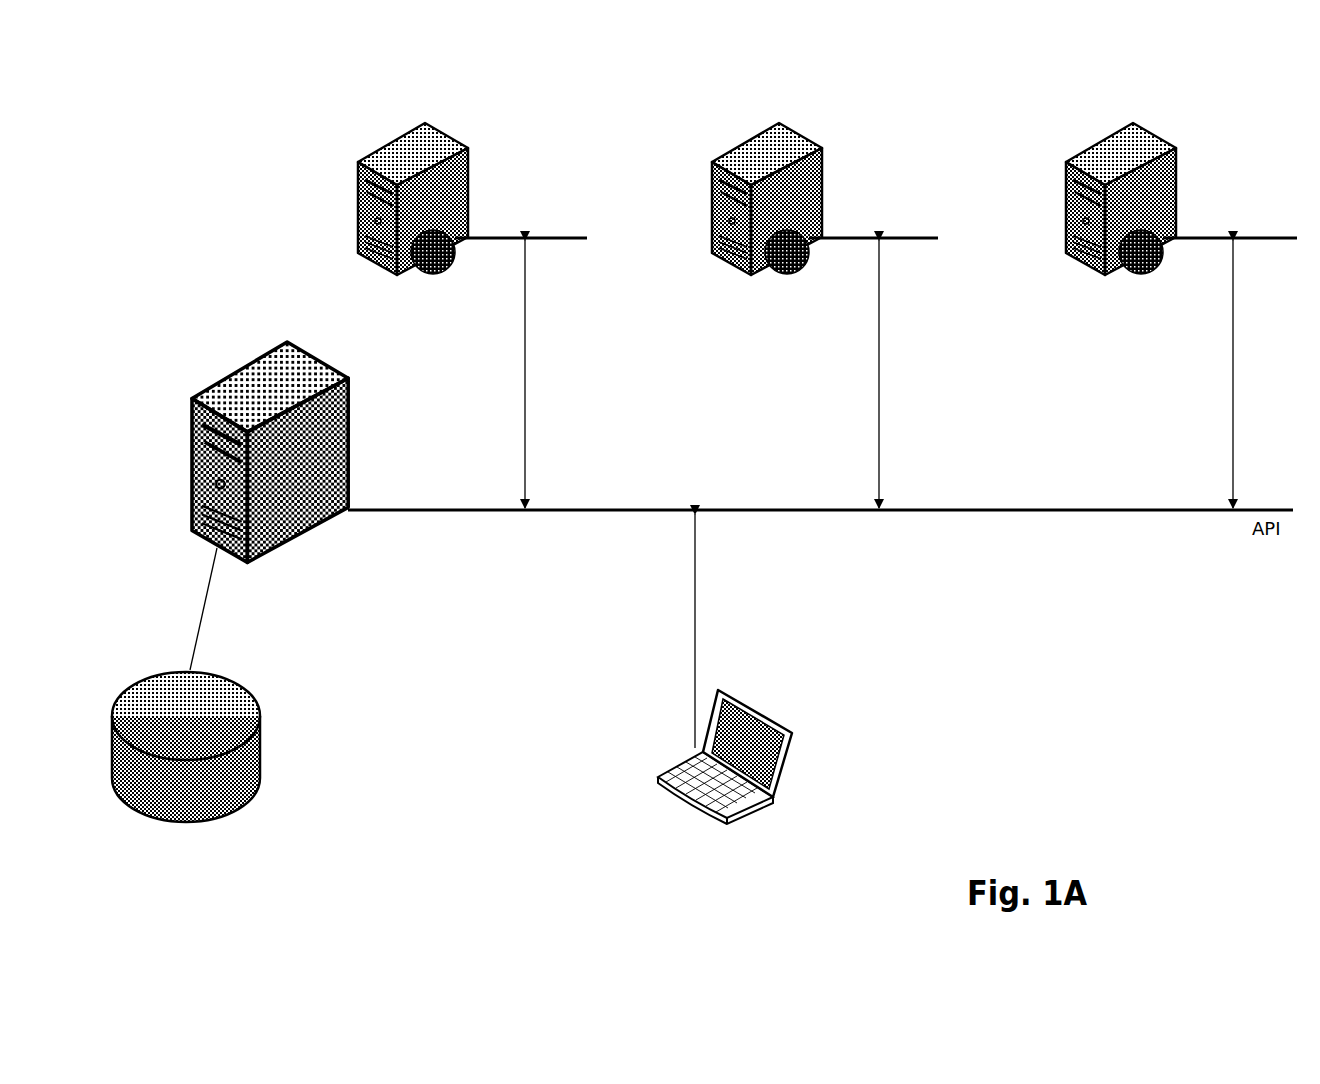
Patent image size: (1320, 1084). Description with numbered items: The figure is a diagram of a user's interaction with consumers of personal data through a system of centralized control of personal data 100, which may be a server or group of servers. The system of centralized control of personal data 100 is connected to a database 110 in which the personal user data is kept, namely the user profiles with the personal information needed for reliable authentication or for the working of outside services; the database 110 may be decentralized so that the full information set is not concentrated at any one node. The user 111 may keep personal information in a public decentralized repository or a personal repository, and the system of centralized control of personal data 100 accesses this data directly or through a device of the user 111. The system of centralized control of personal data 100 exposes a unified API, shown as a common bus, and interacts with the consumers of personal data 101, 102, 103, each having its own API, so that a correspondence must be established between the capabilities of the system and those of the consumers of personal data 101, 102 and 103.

The system of centralized control of personal data 100 is at (265, 506).
The consumer of personal data 101 is at (472, 302).
The consumer of personal data 102 is at (825, 302).
The consumer of personal data 103 is at (1181, 302).
The database 110 is at (186, 764).
The user 111 is at (724, 674).